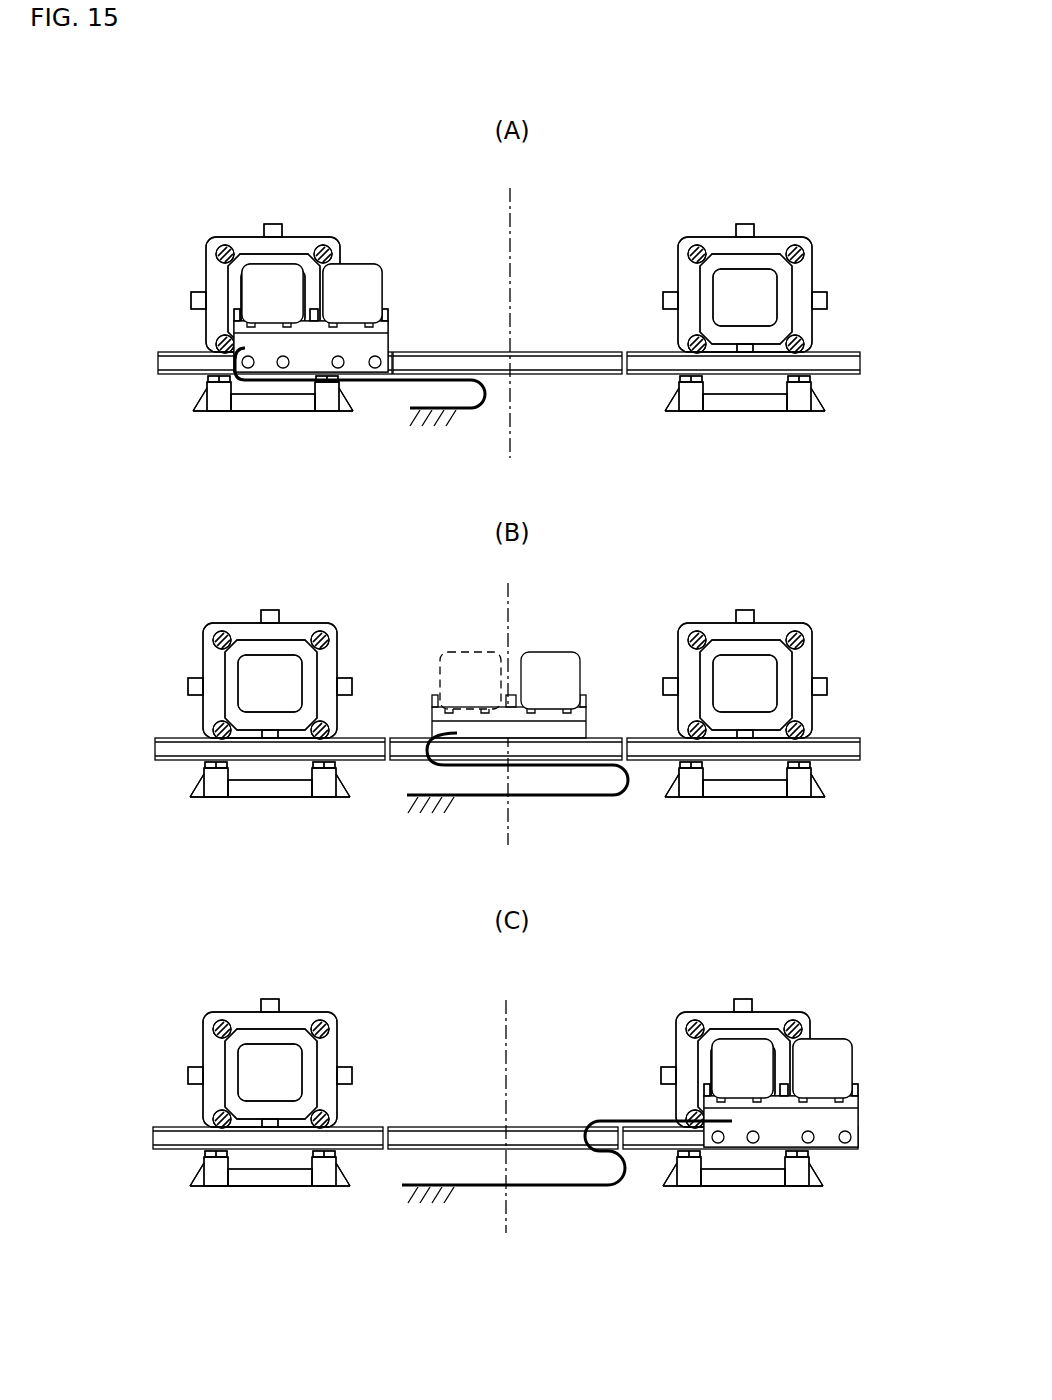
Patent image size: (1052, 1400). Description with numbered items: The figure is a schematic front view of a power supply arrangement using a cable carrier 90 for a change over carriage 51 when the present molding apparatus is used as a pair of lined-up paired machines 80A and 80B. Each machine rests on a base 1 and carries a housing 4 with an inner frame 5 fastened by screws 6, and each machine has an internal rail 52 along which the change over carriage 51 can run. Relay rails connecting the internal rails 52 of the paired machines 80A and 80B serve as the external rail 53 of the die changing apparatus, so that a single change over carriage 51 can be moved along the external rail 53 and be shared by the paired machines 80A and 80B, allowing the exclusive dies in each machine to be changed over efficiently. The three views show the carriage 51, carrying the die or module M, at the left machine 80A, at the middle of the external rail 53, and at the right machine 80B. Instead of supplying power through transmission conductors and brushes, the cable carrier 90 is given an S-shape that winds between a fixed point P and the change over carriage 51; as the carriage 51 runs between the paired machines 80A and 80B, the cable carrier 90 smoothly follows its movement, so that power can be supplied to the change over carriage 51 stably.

The paired machine 80A is at (228, 222).
The paired machine 80B is at (793, 228).
The base 1 is at (276, 420).
The head unit housing 4 is at (212, 272).
The mounting frame 5 is at (297, 258).
The screws 6 is at (341, 249).
The change over carriage 51 is at (392, 320).
The internal rail 52 is at (166, 380).
The external rail 53 is at (575, 348).
The module / electronic component M is at (375, 290).
The cable carrier 90 is at (478, 412).
The fixed point P is at (432, 826).